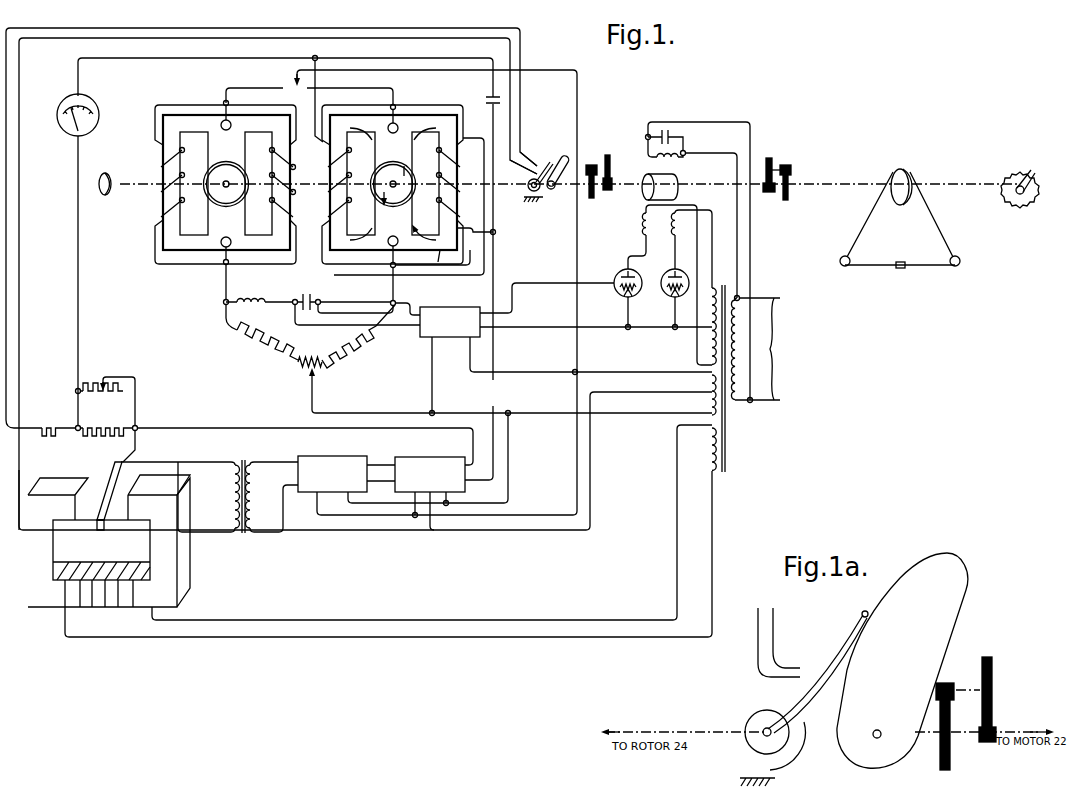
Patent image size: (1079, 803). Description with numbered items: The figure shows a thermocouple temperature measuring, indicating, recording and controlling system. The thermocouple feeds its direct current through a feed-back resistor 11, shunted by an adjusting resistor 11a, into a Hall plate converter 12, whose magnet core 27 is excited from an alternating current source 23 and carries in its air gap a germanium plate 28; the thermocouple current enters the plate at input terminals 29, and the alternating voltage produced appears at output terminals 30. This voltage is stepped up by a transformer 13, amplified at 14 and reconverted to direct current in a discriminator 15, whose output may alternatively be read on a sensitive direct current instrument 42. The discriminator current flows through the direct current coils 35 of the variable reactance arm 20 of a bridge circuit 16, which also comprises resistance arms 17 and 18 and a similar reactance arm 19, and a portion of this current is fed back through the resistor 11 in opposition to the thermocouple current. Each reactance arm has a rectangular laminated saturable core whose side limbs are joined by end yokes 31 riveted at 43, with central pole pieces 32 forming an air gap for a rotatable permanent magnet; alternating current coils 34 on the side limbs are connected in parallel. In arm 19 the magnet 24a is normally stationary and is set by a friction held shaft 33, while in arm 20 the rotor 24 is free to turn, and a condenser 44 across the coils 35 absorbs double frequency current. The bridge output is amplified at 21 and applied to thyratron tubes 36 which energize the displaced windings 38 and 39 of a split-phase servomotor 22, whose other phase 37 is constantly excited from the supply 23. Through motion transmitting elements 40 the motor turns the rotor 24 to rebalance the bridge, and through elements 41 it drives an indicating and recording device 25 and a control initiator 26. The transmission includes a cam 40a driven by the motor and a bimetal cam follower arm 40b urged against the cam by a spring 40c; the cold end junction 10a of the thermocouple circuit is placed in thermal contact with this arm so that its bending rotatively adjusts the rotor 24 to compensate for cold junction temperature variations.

In FIG. 1, the sensitive direct current instrument 42 is at (62, 104).
In FIG. 1, the rivets 43 is at (226, 100).
In FIG. 1, the end yokes 31 is at (189, 118).
In FIG. 1, the alternating current coil 34 is at (163, 165).
In FIG. 1, the central pole pieces 32 is at (210, 157).
In FIG. 1, the permanent magnet rotor 24a is at (214, 195).
In FIG. 1, the friction held shaft 33 is at (128, 188).
In FIG. 1, the reactance arm 19 is at (247, 256).
In FIG. 1, the permanent magnet rotor 24 is at (378, 193).
In FIG. 1, the direct current winding coils 35 is at (447, 156).
In FIG. 1, the variable reactance arm 20 is at (438, 262).
In FIG. 1, the bridge circuit 16 is at (314, 293).
In FIG. 1, the resistance arm 17 is at (262, 350).
In FIG. 1, the resistance arm 18 is at (352, 354).
In FIG. 1, the amplifier 21 is at (451, 340).
In FIG. 1, the condenser 44 is at (487, 100).
In FIG. 1, the cold end junction 10a is at (532, 172).
In FIG. 1A, the cold end junction 10a is at (801, 668).
In FIG. 1, the spring 40c is at (540, 198).
In FIG. 1A, the spring 40c is at (746, 722).
In FIG. 1, the cam follower arm 40b is at (548, 160).
In FIG. 1A, the cam follower arm 40b is at (841, 630).
In FIG. 1, the cam 40a is at (565, 157).
In FIG. 1A, the cam 40a is at (949, 612).
In FIG. 1, the motion transmitting elements 40 is at (596, 155).
In FIG. 1A, the motion transmitting elements 40 is at (916, 776).
In FIG. 1, the phase winding 37 is at (650, 155).
In FIG. 1, the servomotor 22 is at (701, 184).
In FIG. 1, the motion transmitting elements 41 is at (788, 155).
In FIG. 1, the indicating and recording device 25 is at (906, 253).
In FIG. 1, the control initiator 26 is at (1032, 212).
In FIG. 1, the displaced winding 38 is at (642, 231).
In FIG. 1, the displaced winding 39 is at (677, 232).
In FIG. 1, the thyratron tubes 36 is at (661, 275).
In FIG. 1, the alternating current source 23 is at (746, 378).
In FIG. 1, the feed-back resistor 11 is at (102, 426).
In FIG. 1, the shunt resistor 11a is at (100, 388).
In FIG. 1, the magnet core 27 is at (190, 578).
In FIG. 1, the output terminals 30 is at (106, 466).
In FIG. 1, the input terminals 29 is at (133, 459).
In FIG. 1, the Hall plate 28 is at (101, 528).
In FIG. 1, the Hall plate converter 12 is at (23, 552).
In FIG. 1, the step-up transformer 13 is at (253, 552).
In FIG. 1, the amplifier 14 is at (338, 456).
In FIG. 1, the discriminator 15 is at (433, 457).